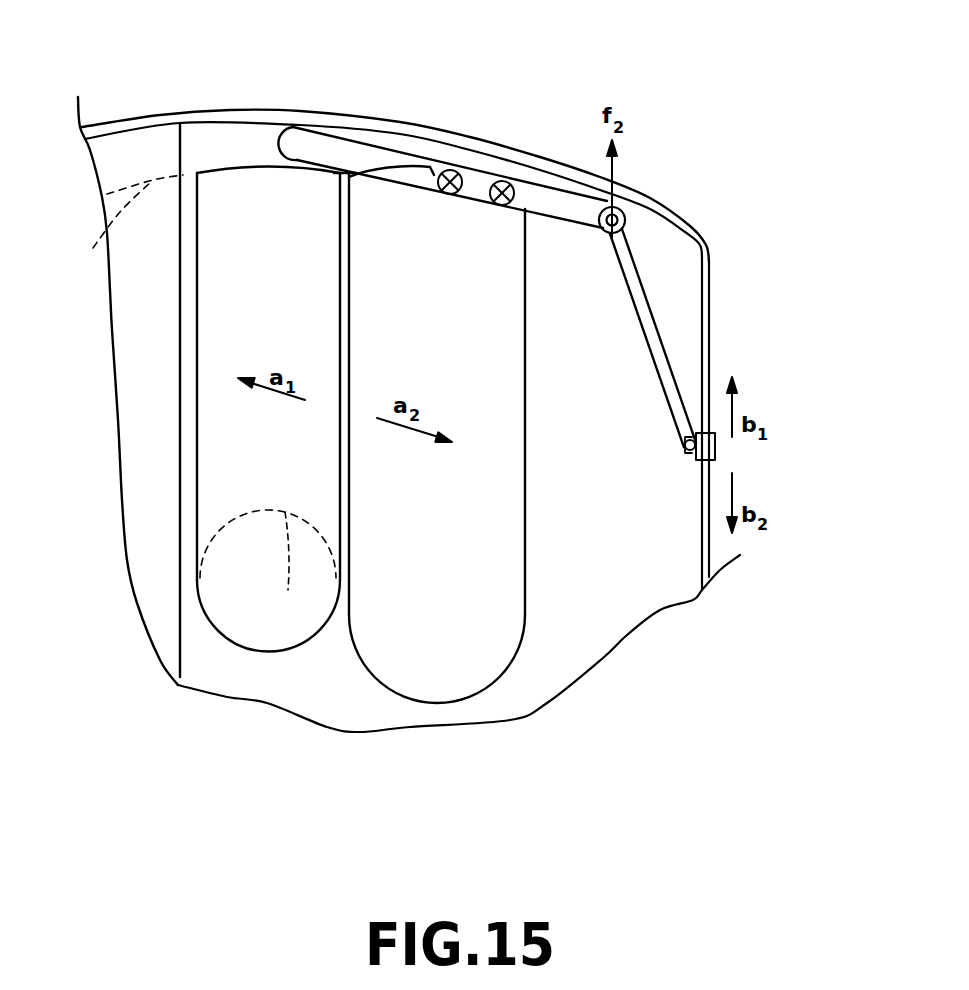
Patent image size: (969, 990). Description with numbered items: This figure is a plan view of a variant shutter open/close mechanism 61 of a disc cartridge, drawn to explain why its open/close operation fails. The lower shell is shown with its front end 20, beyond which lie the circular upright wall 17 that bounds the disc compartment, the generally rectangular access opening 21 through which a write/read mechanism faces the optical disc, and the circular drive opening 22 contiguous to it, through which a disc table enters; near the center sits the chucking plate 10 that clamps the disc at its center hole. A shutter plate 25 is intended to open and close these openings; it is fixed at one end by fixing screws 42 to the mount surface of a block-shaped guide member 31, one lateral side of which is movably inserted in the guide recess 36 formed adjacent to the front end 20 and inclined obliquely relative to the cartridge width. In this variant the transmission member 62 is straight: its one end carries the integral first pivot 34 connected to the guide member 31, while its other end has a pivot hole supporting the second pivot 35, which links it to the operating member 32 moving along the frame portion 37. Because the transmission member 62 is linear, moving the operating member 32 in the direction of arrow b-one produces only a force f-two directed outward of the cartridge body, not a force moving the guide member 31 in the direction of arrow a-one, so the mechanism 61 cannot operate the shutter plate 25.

The front end 20 is at (158, 115).
The circular upright wall 17 is at (113, 229).
The access opening 21 is at (200, 320).
The drive opening 22 is at (210, 623).
The chucking plate 10 is at (284, 571).
The shutter plate 25 is at (483, 640).
The guide recess 36 is at (343, 149).
The fixing screws 42 is at (450, 170).
The guide member 31 is at (533, 200).
The first pivot 34 is at (624, 213).
The transmission member 62 is at (647, 320).
The guide rail 37 is at (710, 372).
The operating member 32 is at (715, 440).
The second pivot 35 is at (685, 447).
The shutter open/close mechanism 61 is at (586, 128).